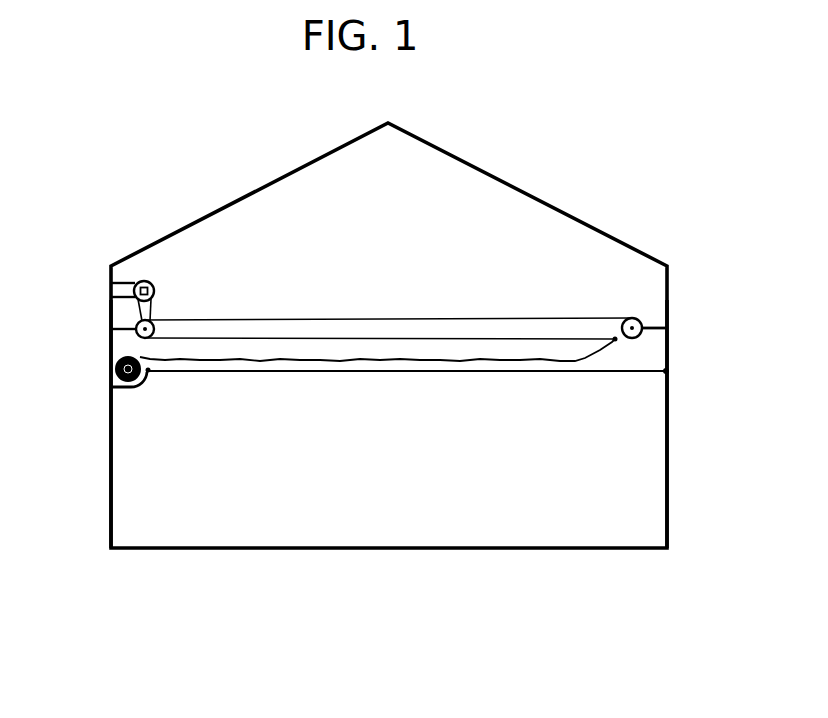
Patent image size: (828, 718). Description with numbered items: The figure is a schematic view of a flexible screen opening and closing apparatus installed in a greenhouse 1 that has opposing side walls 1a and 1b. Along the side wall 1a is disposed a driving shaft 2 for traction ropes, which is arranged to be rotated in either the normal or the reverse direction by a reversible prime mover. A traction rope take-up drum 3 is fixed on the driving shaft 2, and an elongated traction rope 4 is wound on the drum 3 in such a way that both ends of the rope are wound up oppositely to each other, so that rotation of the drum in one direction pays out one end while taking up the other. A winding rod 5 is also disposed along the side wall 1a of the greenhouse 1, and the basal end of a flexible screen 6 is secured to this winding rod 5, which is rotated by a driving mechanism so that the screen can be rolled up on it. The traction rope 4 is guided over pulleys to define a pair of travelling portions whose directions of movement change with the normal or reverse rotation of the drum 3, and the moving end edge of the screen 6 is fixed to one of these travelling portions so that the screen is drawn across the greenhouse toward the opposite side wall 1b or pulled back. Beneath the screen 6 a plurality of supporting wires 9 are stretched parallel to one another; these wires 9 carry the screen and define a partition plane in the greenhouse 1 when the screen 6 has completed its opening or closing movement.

The greenhouse 1 is at (556, 191).
The side wall 1a is at (110, 447).
The side wall 1b is at (668, 424).
The driving shaft 2 is at (155, 284).
The traction rope take-up drum 3 is at (150, 292).
The traction rope 4 is at (148, 312).
The winding rod 5 is at (112, 372).
The flexible screen 6 is at (418, 358).
The supporting wire 9 is at (508, 372).